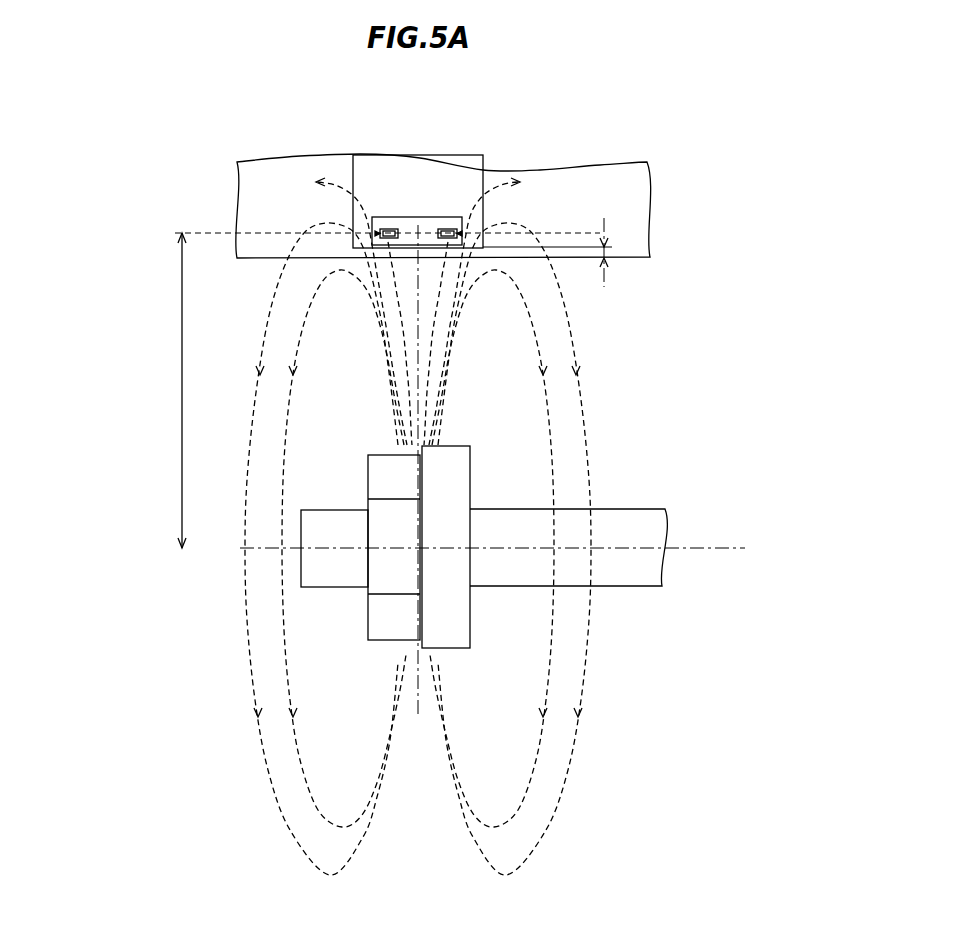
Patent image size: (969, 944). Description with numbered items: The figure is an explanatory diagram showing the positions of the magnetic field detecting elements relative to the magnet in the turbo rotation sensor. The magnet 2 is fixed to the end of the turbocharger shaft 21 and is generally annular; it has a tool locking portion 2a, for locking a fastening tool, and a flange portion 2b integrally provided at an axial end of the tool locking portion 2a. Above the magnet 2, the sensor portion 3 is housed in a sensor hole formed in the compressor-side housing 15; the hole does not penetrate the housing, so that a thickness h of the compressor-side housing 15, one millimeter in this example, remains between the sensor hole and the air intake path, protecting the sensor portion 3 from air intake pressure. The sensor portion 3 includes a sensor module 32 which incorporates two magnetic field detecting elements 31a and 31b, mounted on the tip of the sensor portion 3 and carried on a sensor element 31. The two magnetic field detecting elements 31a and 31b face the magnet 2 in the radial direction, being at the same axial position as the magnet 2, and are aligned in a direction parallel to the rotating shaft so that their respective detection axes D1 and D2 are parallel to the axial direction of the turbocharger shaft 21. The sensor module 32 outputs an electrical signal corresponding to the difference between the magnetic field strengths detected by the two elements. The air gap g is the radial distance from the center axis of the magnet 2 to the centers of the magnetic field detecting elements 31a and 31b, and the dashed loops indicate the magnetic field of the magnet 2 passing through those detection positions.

The sensor portion 3 is at (275, 177).
The compressor-side housing 15 is at (242, 197).
The sensor module 32 is at (380, 217).
The sensor element substrate 31 is at (420, 178).
The magnetic field detecting element 31a is at (393, 228).
The magnetic field detecting element 31b is at (443, 223).
The detection axis D1 is at (397, 230).
The detection axis D2 is at (453, 227).
The magnet 2 is at (405, 519).
The tool locking portion 2a is at (375, 480).
The flange portion 2b is at (462, 480).
The turbocharger shaft 21 is at (628, 515).
The air gap g is at (380, 390).
The thickness h is at (554, 254).